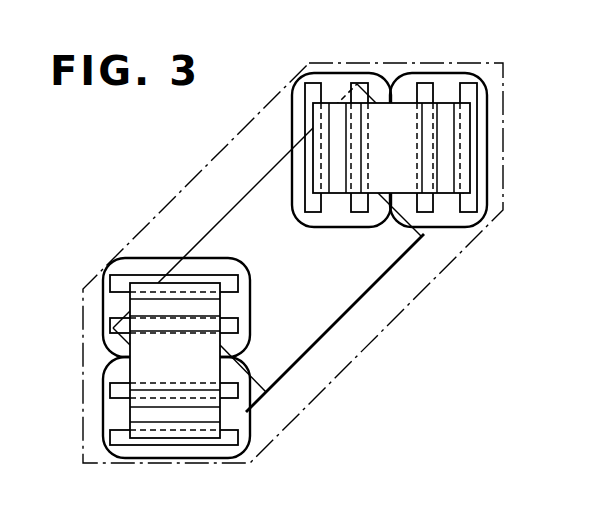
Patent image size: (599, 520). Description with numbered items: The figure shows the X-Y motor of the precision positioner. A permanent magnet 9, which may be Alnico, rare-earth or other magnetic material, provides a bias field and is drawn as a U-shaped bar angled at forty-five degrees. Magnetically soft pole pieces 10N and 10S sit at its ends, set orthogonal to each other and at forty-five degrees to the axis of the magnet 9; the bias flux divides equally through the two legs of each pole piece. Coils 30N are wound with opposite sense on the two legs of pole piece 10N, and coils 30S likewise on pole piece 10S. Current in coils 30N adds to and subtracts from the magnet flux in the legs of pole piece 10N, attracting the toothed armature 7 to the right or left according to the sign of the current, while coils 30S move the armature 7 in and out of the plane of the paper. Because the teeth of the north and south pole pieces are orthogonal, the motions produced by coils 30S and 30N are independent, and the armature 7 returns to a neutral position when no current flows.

The armature 7 is at (387, 326).
The permanent magnet 9 is at (398, 260).
The north pole piece 10N is at (470, 150).
The south pole piece 10S is at (132, 300).
The coils 30N is at (405, 72).
The coils 30S is at (102, 345).